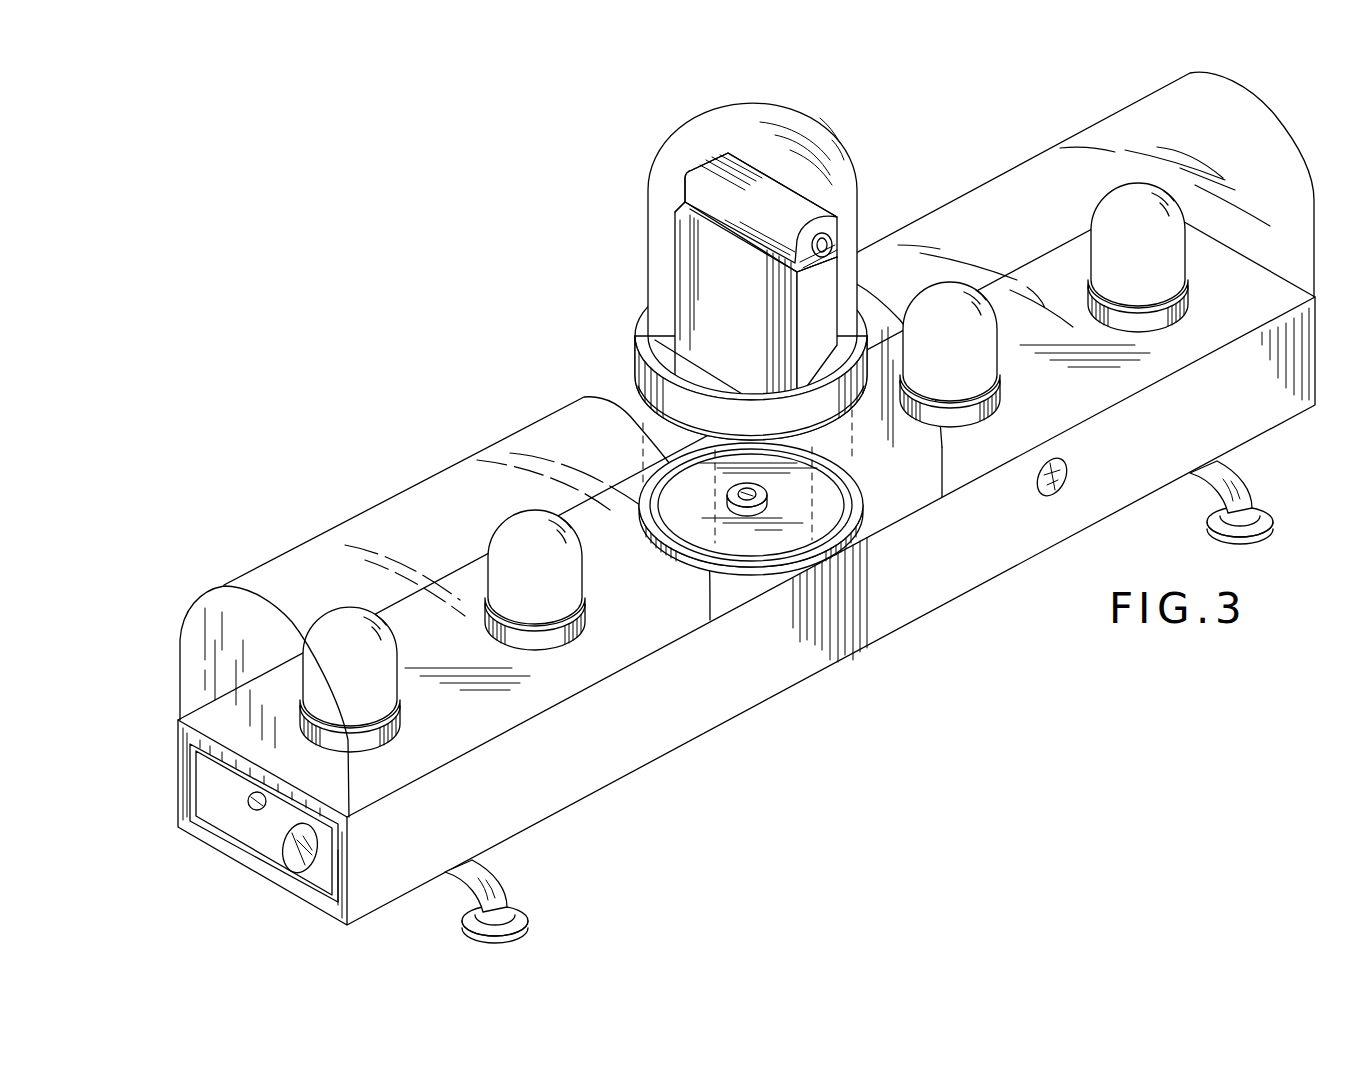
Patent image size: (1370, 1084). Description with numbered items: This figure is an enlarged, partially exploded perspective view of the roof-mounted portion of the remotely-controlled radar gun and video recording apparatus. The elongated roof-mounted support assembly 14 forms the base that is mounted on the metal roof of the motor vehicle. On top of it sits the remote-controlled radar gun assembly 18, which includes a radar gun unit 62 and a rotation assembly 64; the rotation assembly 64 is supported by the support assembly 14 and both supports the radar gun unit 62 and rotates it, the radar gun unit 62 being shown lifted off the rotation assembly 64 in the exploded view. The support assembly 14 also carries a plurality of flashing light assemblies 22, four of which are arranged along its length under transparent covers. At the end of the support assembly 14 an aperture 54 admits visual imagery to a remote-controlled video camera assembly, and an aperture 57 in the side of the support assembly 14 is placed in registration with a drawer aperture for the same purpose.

The support assembly 14 is at (903, 573).
The remote-controlled radar gun assembly 18 is at (666, 339).
The flashing light assemblies 22 is at (340, 633).
The fourth aperture 54 is at (292, 858).
The apertures 57 is at (1067, 470).
The radar gun unit 62 is at (740, 207).
The rotation assembly 64 is at (647, 500).